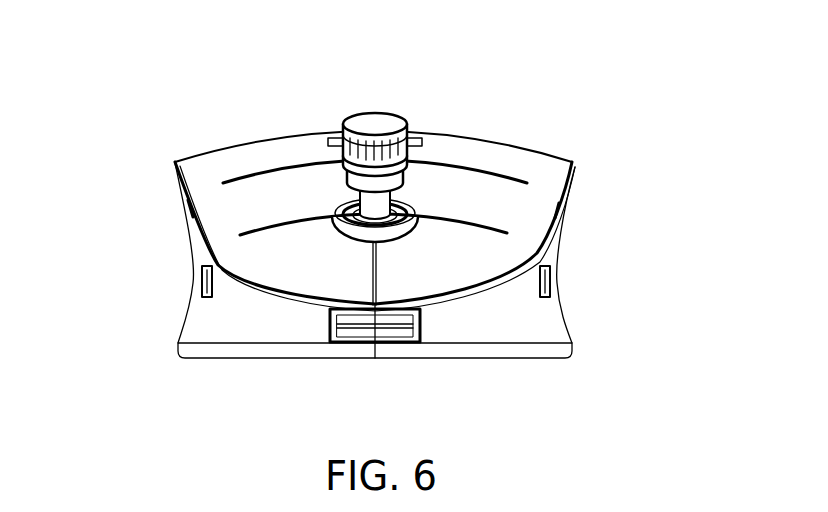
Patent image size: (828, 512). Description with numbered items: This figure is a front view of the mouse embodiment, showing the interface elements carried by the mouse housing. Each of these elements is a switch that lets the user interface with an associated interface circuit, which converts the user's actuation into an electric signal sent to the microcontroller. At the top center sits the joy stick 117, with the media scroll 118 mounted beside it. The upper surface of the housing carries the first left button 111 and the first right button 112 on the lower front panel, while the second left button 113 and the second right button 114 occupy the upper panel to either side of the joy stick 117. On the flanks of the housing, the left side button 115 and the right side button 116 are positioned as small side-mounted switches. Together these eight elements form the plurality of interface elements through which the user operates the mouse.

The first left button 111 is at (447, 277).
The first right button 112 is at (300, 277).
The second left button 113 is at (497, 205).
The second right button 114 is at (236, 198).
The left side button 115 is at (549, 286).
The right side button 116 is at (203, 292).
The joy stick 117 is at (397, 115).
The media scroll 118 is at (327, 138).